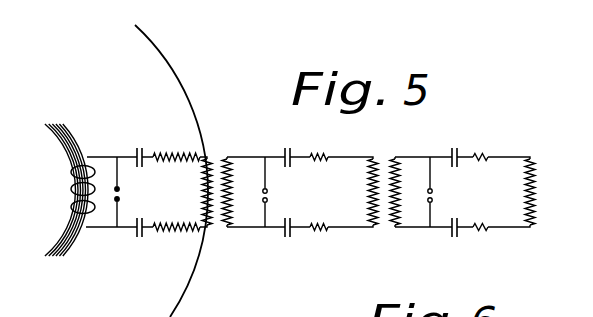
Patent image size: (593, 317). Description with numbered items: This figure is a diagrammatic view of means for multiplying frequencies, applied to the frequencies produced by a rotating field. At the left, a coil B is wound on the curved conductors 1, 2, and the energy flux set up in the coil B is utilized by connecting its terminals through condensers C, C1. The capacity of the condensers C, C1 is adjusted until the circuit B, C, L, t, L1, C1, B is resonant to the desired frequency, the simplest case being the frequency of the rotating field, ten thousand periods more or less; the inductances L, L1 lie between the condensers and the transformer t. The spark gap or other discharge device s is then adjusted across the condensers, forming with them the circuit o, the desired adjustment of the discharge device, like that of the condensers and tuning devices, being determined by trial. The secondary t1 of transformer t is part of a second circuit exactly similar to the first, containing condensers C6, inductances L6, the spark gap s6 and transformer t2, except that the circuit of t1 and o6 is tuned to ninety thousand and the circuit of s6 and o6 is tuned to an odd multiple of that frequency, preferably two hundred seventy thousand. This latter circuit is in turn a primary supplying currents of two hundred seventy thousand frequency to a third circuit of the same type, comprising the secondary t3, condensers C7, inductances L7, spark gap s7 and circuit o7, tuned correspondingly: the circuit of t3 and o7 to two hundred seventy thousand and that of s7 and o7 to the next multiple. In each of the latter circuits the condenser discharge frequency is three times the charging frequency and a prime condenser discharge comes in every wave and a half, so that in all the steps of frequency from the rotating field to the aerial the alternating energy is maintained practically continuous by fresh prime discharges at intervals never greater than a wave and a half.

The conductor (lower portion of ring circuit) 1 is at (182, 302).
The conductor (upper portion of ring circuit) 2 is at (177, 75).
The coil B is at (64, 190).
The condenser C is at (134, 143).
The condenser C1 is at (131, 242).
The inductance L is at (176, 145).
The inductance L1 is at (176, 242).
The spark gap or discharge device s is at (126, 192).
The oscillating circuit o is at (146, 192).
The transformer t is at (196, 192).
The secondary of transformer t1 is at (237, 192).
The transformer t2 is at (361, 192).
The transformer secondary t3 is at (406, 192).
The spark gap s6 is at (280, 192).
The spark gap s7 is at (442, 192).
The oscillating circuit o6 is at (300, 192).
The oscillating circuit o7 is at (465, 192).
The condenser C6 is at (292, 194).
The condenser C7 is at (452, 195).
The inductance L6 is at (333, 197).
The inductance L7 is at (495, 198).